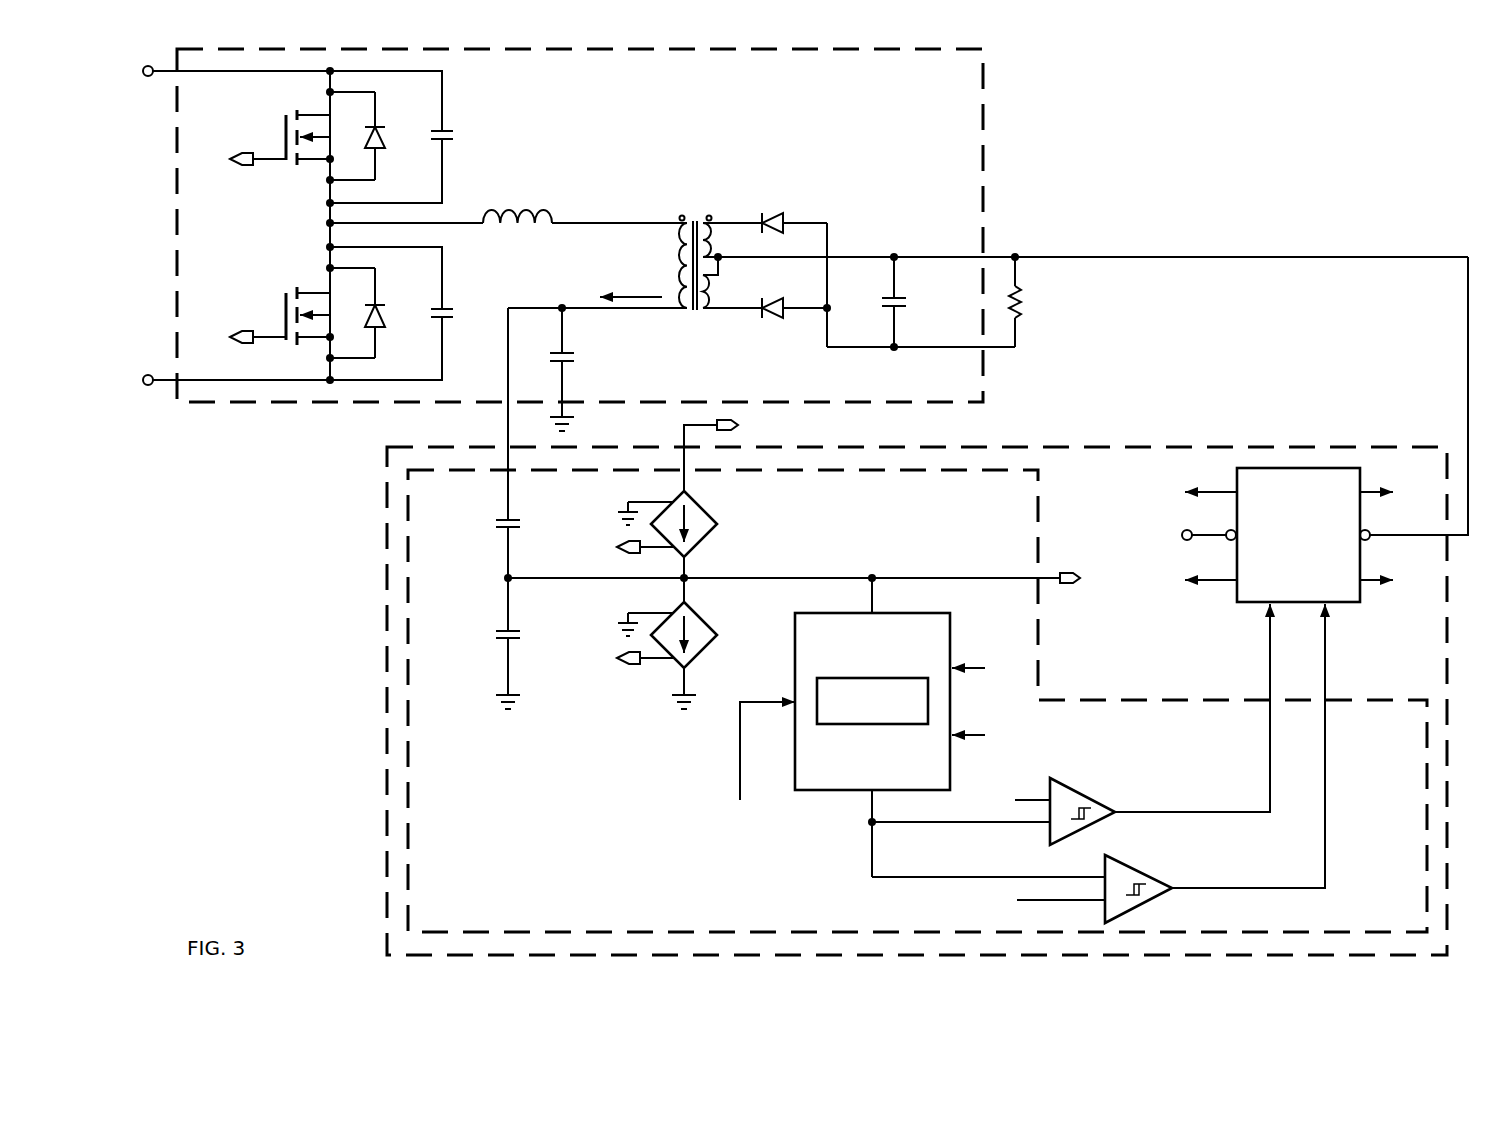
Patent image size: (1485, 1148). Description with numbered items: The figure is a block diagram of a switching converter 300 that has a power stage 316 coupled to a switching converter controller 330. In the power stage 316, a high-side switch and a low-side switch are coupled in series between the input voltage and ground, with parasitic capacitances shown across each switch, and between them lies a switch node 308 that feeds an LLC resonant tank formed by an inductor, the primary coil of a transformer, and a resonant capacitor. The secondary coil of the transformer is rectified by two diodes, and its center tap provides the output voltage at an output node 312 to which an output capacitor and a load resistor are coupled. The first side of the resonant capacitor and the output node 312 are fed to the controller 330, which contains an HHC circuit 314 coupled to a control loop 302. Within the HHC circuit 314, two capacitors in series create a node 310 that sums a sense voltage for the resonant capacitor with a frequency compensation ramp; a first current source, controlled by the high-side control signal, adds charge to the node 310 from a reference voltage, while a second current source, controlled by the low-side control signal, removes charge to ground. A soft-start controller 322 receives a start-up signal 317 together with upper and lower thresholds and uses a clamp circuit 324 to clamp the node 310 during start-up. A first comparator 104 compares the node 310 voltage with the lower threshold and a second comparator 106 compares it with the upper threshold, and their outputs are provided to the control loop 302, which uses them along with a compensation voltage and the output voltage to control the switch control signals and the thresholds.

The switching converter 300 is at (1399, 111).
The control loop 302 is at (1270, 535).
The switch node 308 is at (323, 222).
The Vcr node 310 is at (501, 580).
The output node 312 is at (896, 254).
The HHC circuit 314 is at (917, 620).
The power stage 316 is at (995, 115).
The start-up signal 317 is at (740, 752).
The soft-start controller 322 is at (852, 793).
The clamp circuit 324 is at (872, 726).
The switching converter controller 330 is at (376, 731).
The first comparator 104 is at (1083, 793).
The second comparator 106 is at (1140, 868).